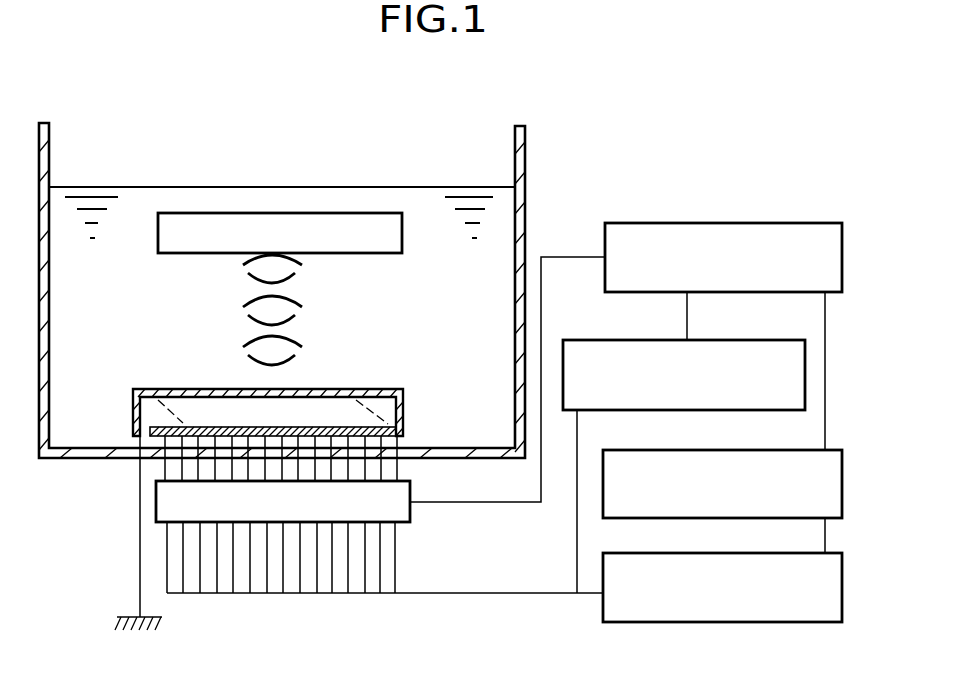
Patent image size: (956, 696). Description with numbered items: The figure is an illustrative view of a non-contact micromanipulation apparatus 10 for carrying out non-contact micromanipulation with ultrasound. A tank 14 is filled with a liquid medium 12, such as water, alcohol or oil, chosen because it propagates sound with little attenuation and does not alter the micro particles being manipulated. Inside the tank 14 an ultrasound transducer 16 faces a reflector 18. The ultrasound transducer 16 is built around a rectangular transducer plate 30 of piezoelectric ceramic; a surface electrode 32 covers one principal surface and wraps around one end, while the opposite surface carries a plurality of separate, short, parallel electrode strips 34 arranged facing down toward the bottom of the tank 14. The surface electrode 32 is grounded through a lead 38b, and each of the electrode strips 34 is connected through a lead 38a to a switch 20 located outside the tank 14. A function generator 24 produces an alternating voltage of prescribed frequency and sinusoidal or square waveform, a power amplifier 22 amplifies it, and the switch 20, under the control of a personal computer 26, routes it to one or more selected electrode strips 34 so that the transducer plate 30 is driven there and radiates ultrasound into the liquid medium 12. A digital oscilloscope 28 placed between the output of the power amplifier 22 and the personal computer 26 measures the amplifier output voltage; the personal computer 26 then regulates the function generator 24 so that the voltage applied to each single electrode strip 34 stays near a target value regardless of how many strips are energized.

The non-contact micromanipulation apparatus 10 is at (433, 136).
The liquid medium 12 is at (130, 202).
The tank 14 is at (527, 162).
The ultrasound transducer 16 is at (362, 389).
The reflector 18 is at (318, 213).
The switch 20 is at (400, 525).
The power amplifier 22 is at (712, 622).
The function generator 24 is at (842, 468).
The personal computer 26 is at (730, 223).
The digital oscilloscope 28 is at (585, 340).
The transducer plate 30 is at (403, 405).
The surface electrode 32 is at (188, 389).
The electrode strips 34 is at (405, 432).
The connecting leads 38a is at (165, 463).
The connecting lead 38b is at (140, 494).